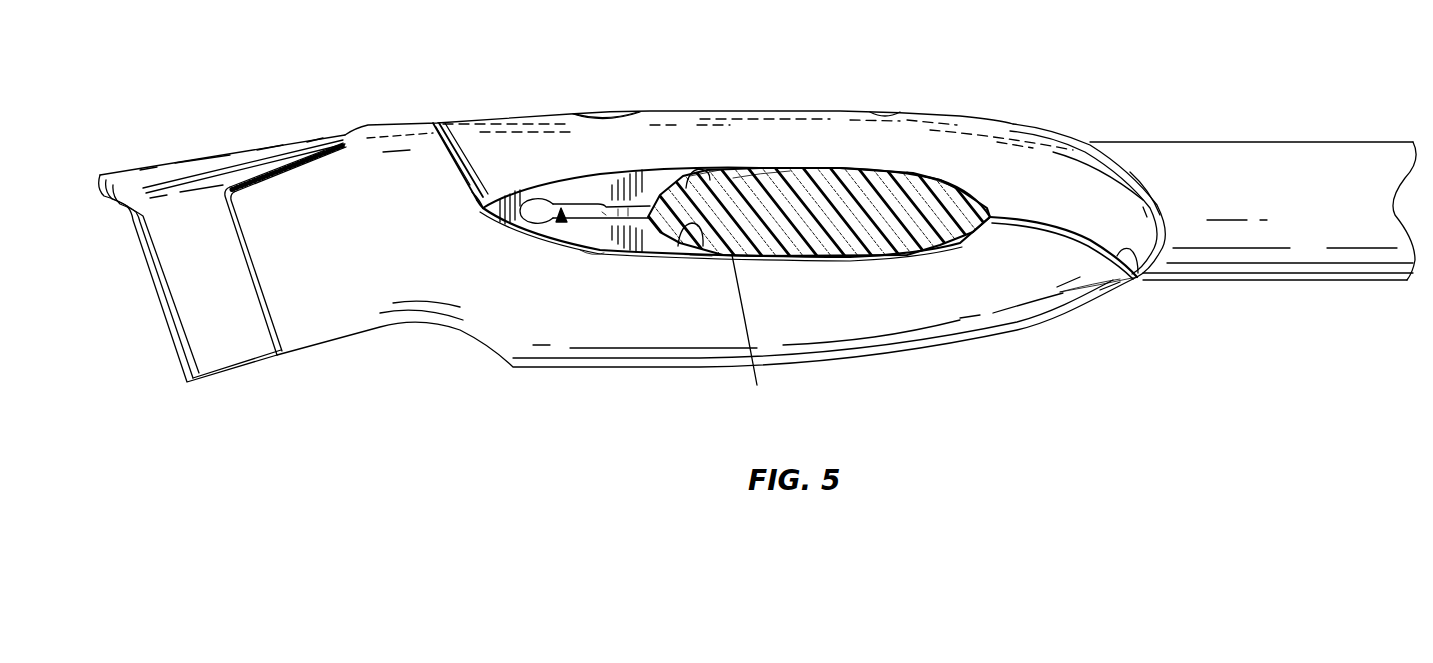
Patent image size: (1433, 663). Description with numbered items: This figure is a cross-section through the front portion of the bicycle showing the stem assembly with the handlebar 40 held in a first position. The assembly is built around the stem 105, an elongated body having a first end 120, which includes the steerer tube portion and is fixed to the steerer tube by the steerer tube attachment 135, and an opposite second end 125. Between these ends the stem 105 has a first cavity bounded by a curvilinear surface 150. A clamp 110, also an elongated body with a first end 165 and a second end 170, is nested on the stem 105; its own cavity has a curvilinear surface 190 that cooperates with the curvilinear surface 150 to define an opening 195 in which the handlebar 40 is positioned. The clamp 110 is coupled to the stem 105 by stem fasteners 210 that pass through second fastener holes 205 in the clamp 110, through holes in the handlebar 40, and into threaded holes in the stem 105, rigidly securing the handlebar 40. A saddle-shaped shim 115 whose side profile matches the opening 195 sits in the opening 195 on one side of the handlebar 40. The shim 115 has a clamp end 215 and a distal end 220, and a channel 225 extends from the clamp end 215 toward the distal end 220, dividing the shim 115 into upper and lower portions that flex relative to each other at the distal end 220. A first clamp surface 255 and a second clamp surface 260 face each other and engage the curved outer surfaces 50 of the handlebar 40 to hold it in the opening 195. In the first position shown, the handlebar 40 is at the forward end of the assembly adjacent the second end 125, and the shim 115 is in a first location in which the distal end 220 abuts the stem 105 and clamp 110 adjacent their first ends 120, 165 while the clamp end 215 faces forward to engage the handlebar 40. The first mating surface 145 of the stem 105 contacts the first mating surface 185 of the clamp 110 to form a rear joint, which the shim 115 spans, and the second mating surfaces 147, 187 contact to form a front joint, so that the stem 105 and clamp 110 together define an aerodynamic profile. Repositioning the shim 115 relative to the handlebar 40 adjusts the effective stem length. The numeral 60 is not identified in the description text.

The handlebar 40 is at (957, 182).
The curved outer surfaces 50 is at (745, 172).
The shaft 60 is at (1278, 158).
The stem 105 is at (402, 123).
The clamp 110 is at (1160, 188).
The shim 115 is at (512, 190).
The first end of the stem 120 is at (363, 300).
The second end of the stem 125 is at (1088, 290).
The steerer tube attachment 135 is at (160, 160).
The first mating surface of the stem 145 is at (472, 197).
The second mating surface of the stem 147 is at (1133, 270).
The curvilinear surface 150 is at (592, 255).
The first end of the clamp 165 is at (470, 145).
The second end of the clamp 170 is at (1065, 150).
The first mating surface of the clamp 185 is at (443, 163).
The second mating surface of the clamp 187 is at (1078, 235).
The curvilinear surface of the second cavity 190 is at (927, 173).
The opening 195 is at (710, 184).
The second fastener holes 205 is at (603, 120).
The stem fasteners 210 is at (603, 217).
The clamp end of the shim 215 is at (680, 250).
The distal end of the shim 220 is at (502, 250).
The channel 225 is at (561, 222).
The first clamp surface 255 is at (686, 182).
The second clamp surface 260 is at (700, 258).